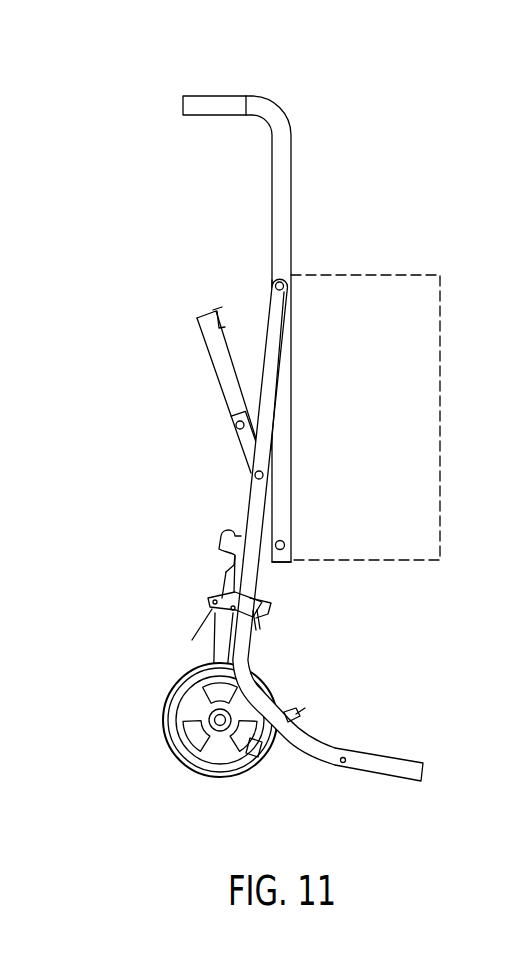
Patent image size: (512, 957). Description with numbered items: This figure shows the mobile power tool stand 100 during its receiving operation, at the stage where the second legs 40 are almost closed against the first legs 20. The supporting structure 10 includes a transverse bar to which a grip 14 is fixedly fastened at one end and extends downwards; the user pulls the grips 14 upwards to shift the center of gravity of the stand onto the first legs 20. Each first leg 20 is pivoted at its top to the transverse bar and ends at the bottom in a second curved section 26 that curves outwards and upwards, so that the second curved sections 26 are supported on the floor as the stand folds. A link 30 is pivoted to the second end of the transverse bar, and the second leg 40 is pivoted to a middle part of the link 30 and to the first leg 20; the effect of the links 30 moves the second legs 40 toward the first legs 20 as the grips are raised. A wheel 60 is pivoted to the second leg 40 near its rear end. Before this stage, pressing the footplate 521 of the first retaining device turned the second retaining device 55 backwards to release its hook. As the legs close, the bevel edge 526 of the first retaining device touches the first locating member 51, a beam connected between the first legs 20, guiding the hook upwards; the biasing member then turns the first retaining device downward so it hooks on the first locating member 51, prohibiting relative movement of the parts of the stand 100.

The mobile power tool stand 100 is at (343, 321).
The supporting structure 10 is at (292, 230).
The grip 14 is at (201, 93).
The first leg 20 is at (263, 310).
The link 30 is at (192, 353).
The second leg 40 is at (232, 638).
The second curved section 26 is at (403, 768).
The second retaining device 55 is at (222, 560).
The footplate 521 is at (222, 592).
The bevel edge 526 is at (270, 602).
The first locating member 51 is at (258, 614).
The wheel 60 is at (152, 717).